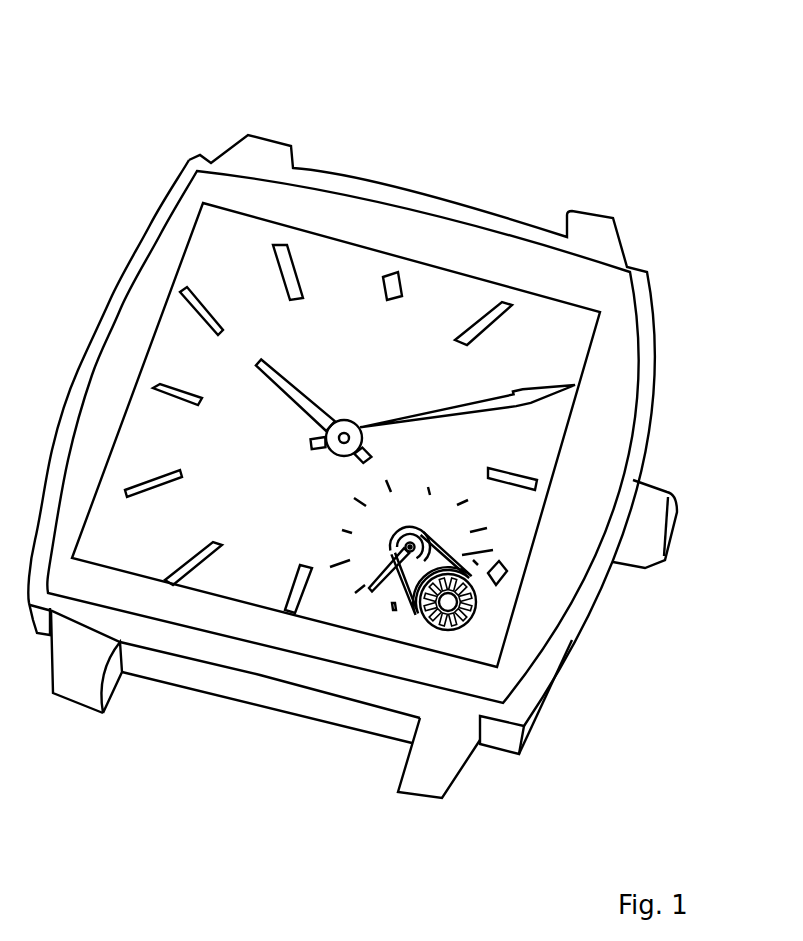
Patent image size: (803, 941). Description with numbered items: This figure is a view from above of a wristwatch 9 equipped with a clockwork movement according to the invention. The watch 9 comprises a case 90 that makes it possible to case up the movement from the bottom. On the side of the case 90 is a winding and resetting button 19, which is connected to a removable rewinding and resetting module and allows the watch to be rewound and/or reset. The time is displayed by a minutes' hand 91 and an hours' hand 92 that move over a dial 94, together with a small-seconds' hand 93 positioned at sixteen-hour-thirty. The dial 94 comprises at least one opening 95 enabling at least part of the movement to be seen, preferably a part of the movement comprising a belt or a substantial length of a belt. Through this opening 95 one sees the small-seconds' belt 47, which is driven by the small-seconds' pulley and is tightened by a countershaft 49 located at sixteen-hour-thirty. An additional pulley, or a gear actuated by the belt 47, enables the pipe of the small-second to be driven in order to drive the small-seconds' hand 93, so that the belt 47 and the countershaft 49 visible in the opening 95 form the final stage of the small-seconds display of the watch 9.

The watch 9 is at (203, 96).
The winding and resetting button 19 is at (648, 500).
The small-seconds' belt 47 is at (407, 558).
The countershaft 49 is at (443, 632).
The case 90 is at (559, 280).
The minutes' hand 91 is at (497, 413).
The hours' hand 92 is at (278, 375).
The small-seconds' hand 93 is at (370, 588).
The dial 94 is at (427, 302).
The opening 95 is at (497, 551).